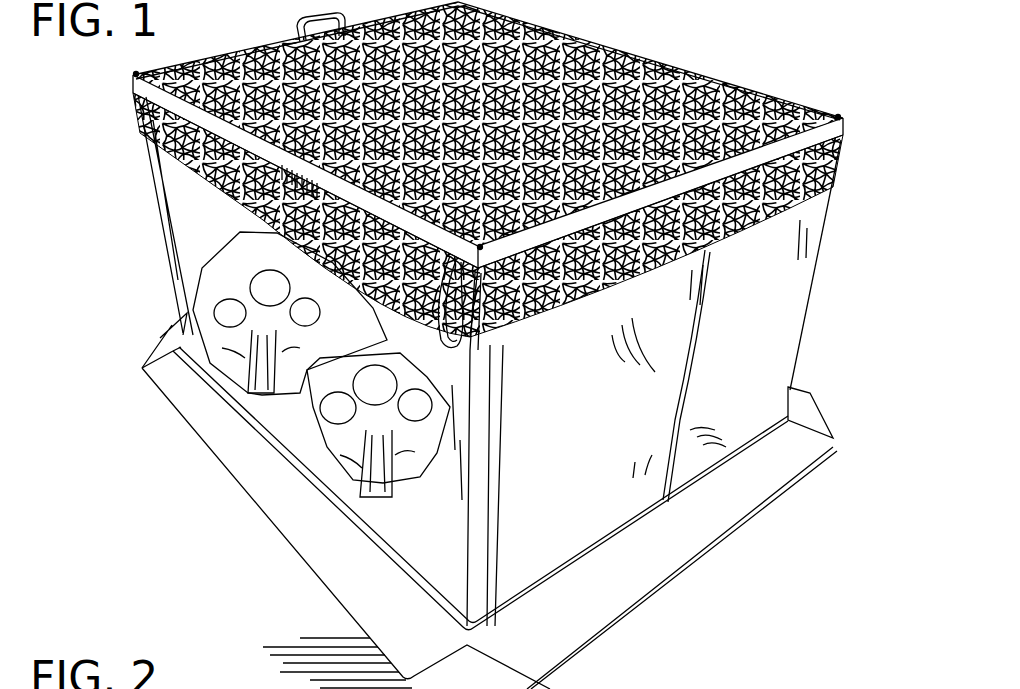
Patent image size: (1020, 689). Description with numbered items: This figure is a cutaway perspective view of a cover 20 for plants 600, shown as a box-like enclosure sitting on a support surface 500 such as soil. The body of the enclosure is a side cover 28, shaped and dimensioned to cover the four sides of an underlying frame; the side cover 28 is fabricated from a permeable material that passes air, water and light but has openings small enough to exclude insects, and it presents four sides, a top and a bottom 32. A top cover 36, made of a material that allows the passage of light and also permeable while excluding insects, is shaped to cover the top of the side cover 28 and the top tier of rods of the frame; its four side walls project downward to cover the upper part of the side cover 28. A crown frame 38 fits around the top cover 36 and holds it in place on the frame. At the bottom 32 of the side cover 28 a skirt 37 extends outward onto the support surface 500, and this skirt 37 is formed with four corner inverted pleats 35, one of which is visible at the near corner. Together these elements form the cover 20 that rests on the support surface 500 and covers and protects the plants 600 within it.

The cover 20 is at (853, 84).
The top cover 36 is at (633, 83).
The crown frame 38 is at (843, 132).
The side cover 28 is at (777, 317).
The corner inverted pleat 35 is at (810, 433).
The bottom 32 is at (690, 487).
The skirt 37 is at (613, 570).
The plants 600 is at (340, 440).
The support surface 500 is at (270, 647).